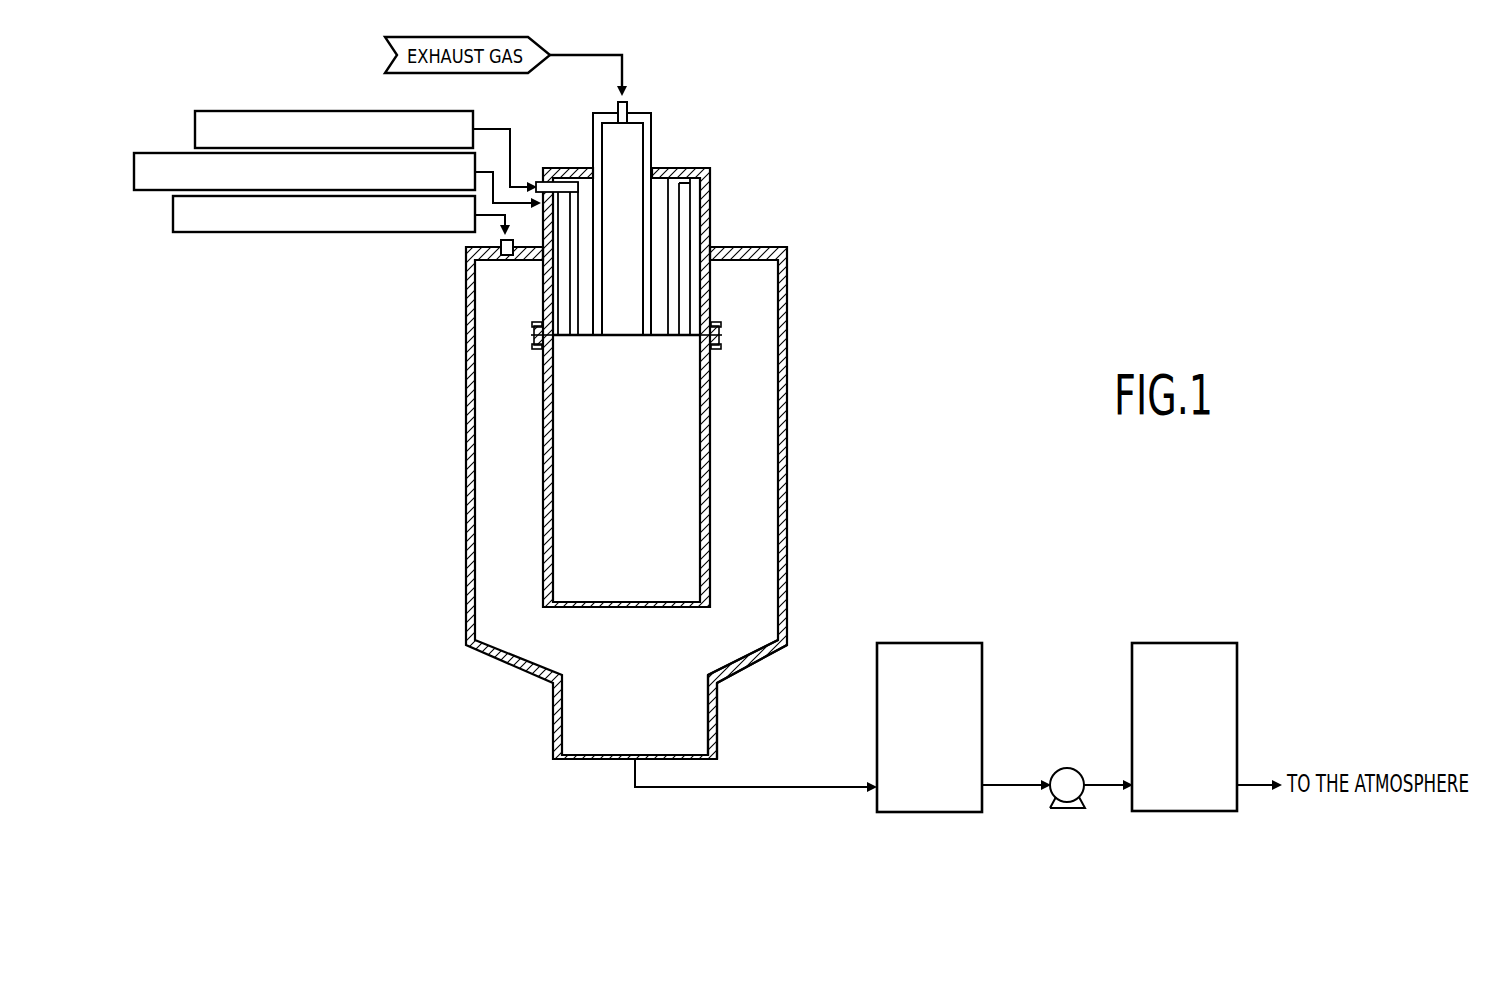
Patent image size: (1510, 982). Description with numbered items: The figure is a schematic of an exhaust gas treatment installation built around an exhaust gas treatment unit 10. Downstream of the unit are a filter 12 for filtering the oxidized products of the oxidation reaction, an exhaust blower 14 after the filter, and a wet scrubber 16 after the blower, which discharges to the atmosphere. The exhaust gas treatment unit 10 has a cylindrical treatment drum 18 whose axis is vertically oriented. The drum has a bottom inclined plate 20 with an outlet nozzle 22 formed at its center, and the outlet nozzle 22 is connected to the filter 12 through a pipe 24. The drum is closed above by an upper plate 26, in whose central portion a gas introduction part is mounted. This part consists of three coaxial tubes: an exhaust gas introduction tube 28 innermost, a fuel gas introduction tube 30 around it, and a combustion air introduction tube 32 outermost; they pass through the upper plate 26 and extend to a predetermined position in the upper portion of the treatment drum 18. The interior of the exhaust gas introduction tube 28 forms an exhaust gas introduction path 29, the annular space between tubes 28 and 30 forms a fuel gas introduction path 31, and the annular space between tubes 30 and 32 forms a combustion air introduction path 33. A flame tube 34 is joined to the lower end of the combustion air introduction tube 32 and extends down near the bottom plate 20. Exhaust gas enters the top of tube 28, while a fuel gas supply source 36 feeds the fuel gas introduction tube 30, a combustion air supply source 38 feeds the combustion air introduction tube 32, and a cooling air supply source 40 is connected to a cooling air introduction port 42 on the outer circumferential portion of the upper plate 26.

The exhaust gas treatment unit 10 is at (866, 184).
The filter 12 is at (932, 643).
The exhaust blower 14 is at (1057, 768).
The wet scrubber 16 is at (1177, 643).
The treatment drum 18 is at (788, 460).
The bottom inclined plate 20 is at (747, 667).
The outlet nozzle 22 is at (718, 716).
The pipe 24 is at (820, 783).
The upper plate 26 is at (777, 247).
The exhaust gas introduction tube 28 is at (651, 123).
The exhaust gas introduction path 29 is at (637, 152).
The fuel gas introduction tube 30 is at (680, 186).
The fuel gas introduction path 31 is at (682, 216).
The combustion air introduction tube 32 is at (708, 222).
The combustion air introduction path 33 is at (687, 245).
The flame tube 34 is at (710, 440).
The fuel gas supply source 36 is at (310, 111).
The combustion air supply source 38 is at (176, 153).
The cooling air supply source 40 is at (317, 232).
The cooling air introduction port 42 is at (500, 243).